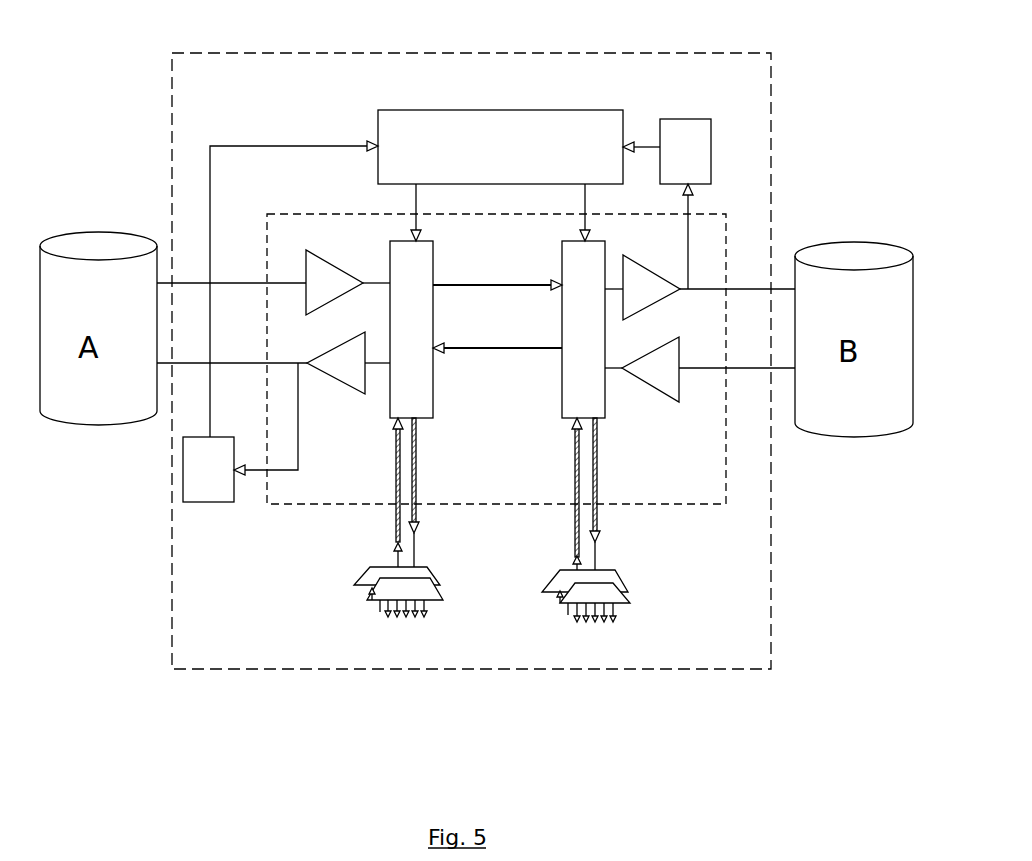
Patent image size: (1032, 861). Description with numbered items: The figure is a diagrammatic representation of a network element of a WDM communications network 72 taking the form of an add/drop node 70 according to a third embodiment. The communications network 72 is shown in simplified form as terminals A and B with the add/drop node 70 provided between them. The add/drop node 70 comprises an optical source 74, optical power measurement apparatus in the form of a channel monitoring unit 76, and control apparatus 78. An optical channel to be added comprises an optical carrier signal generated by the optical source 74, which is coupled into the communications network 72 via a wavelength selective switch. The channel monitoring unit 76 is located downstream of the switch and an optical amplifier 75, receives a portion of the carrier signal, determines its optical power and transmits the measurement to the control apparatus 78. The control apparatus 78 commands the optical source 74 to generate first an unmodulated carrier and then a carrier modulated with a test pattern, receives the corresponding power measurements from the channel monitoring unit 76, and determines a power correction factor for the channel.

The add/drop node 70 is at (232, 655).
The WDM communications network 72 is at (822, 100).
The optical source 74 is at (362, 575).
The optical amplifier 75 is at (318, 278).
The channel monitoring unit 76 is at (692, 130).
The control apparatus 78 is at (552, 125).